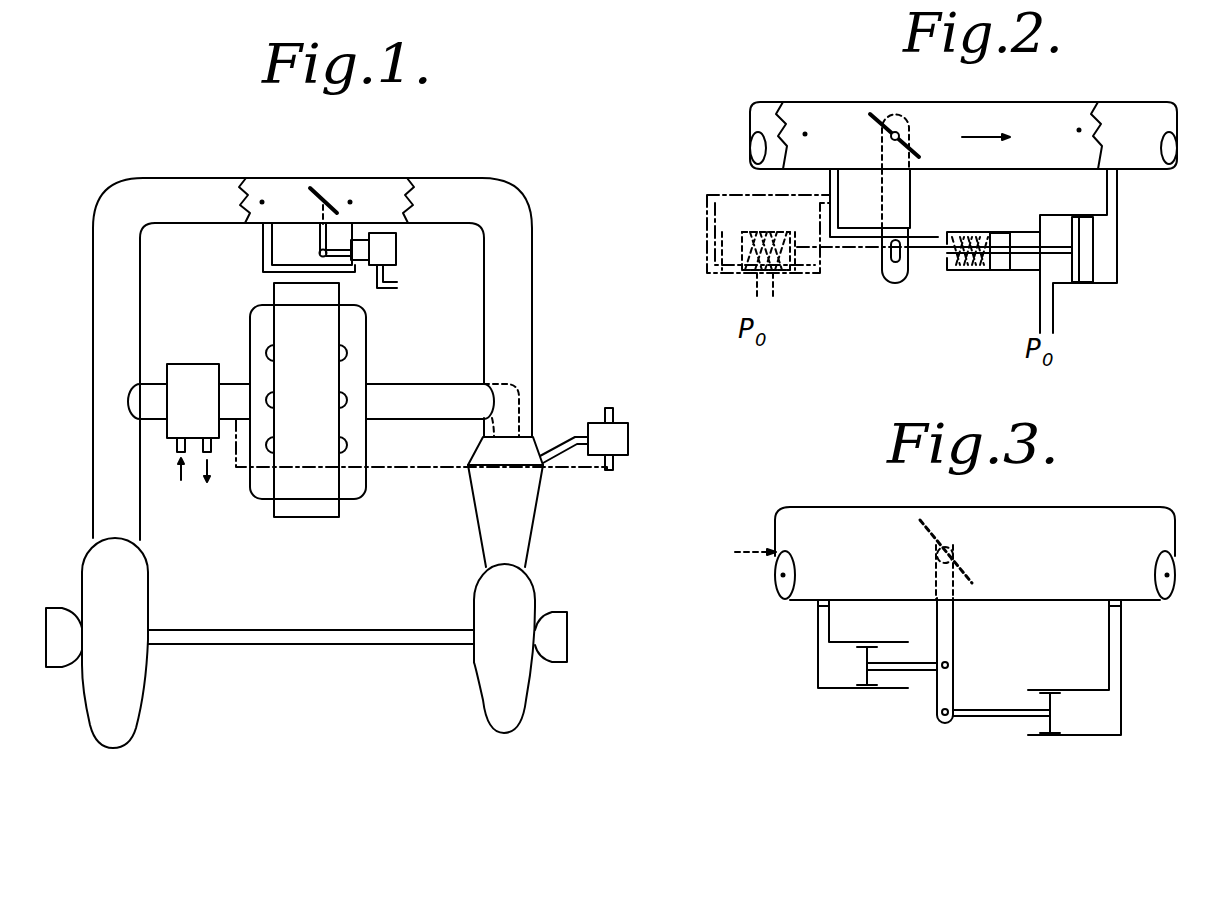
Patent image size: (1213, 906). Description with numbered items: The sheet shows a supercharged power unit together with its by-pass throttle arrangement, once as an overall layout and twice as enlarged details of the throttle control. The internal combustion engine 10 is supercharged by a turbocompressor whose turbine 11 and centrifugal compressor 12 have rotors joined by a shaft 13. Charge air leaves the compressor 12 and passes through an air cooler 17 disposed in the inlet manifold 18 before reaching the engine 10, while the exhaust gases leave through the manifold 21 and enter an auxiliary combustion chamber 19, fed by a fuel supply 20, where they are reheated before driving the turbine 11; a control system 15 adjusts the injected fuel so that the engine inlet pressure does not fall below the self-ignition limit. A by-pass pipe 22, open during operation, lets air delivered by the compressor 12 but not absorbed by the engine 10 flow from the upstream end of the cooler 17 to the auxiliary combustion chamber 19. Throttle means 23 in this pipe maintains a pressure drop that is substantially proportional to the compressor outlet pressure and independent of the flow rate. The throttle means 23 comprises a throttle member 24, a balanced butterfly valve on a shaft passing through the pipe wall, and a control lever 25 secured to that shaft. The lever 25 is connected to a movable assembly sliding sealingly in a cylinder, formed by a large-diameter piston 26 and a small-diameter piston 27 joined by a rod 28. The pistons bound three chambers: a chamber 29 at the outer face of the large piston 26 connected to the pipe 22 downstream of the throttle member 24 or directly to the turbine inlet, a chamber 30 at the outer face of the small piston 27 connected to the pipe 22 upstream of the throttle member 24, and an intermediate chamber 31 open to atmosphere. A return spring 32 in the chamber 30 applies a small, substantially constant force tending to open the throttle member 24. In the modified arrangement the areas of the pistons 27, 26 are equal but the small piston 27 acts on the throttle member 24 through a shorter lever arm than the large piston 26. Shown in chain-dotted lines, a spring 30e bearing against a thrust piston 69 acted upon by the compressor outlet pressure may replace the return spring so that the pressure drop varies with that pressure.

In FIG. 1, the internal combustion engine 10 is at (288, 522).
In FIG. 1, the turbine 11 is at (474, 590).
In FIG. 1, the centrifugal compressor 12 is at (148, 588).
In FIG. 1, the shaft 13 is at (315, 640).
In FIG. 1, the control system 15 is at (627, 441).
In FIG. 1, the air cooler 17 is at (185, 363).
In FIG. 1, the inlet manifold 18 is at (236, 387).
In FIG. 1, the auxiliary combustion chamber 19 is at (531, 518).
In FIG. 1, the fuel supply 20 is at (562, 434).
In FIG. 1, the manifold 21 is at (367, 352).
In FIG. 1, the by-pass pipe 22 is at (93, 350).
In FIG. 2, the by-pass pipe 22 is at (1145, 102).
In FIG. 3, the by-pass pipe 22 is at (970, 553).
In FIG. 1, the throttle means 23 is at (352, 183).
In FIG. 2, the throttle means 23 is at (1122, 261).
In FIG. 3, the throttle means 23 is at (928, 722).
In FIG. 1, the throttle member 24 is at (323, 188).
In FIG. 2, the throttle member 24 is at (883, 114).
In FIG. 3, the throttle member 24 is at (955, 546).
In FIG. 1, the control lever 25 is at (320, 244).
In FIG. 2, the control lever 25 is at (900, 201).
In FIG. 3, the control lever 25 is at (950, 646).
In FIG. 2, the large-diameter piston 26 is at (1085, 278).
In FIG. 3, the large-diameter piston 26 is at (1050, 713).
In FIG. 2, the small-diameter piston 27 is at (993, 264).
In FIG. 3, the small-diameter piston 27 is at (865, 666).
In FIG. 2, the rod 28 is at (1022, 250).
In FIG. 2, the chamber 29 is at (1108, 238).
In FIG. 2, the chamber 30 is at (958, 268).
In FIG. 2, the spring 30e is at (790, 270).
In FIG. 2, the intermediate chamber 31 is at (1050, 266).
In FIG. 2, the return spring 32 is at (968, 242).
In FIG. 2, the piston 69 is at (733, 262).